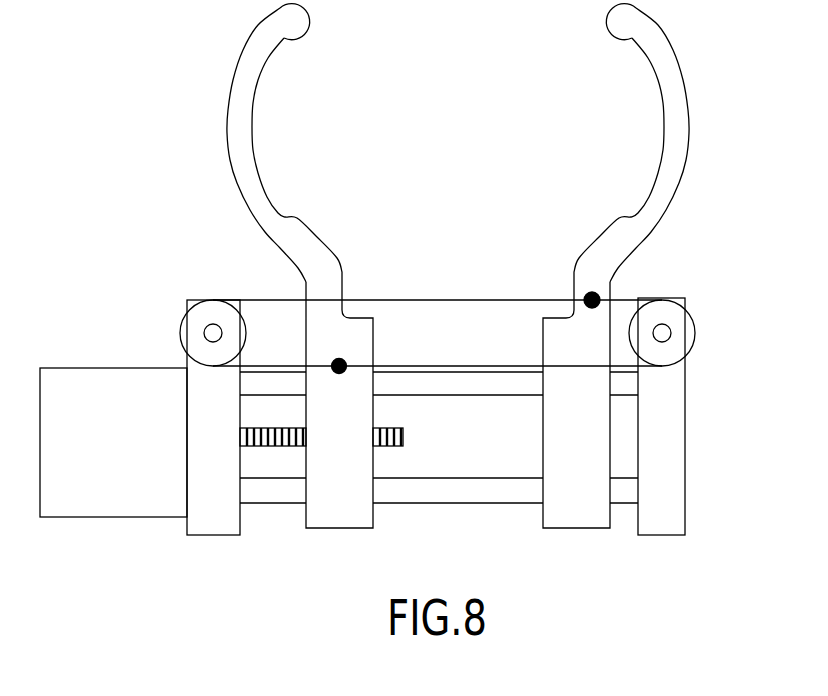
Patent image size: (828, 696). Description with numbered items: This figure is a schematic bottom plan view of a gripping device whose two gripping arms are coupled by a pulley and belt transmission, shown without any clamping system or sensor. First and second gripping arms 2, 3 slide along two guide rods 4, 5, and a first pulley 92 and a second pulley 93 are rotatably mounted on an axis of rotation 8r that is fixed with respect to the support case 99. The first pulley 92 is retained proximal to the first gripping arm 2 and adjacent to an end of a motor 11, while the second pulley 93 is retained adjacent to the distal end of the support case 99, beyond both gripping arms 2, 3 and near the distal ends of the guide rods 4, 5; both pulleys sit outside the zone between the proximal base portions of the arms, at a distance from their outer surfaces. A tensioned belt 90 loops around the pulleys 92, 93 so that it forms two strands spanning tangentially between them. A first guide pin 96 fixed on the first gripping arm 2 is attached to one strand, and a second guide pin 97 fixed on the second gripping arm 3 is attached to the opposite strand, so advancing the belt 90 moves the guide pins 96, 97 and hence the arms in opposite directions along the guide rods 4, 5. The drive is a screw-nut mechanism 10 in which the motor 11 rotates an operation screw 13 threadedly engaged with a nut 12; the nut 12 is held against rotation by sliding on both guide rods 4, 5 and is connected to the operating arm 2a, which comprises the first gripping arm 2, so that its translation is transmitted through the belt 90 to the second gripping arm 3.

The first gripping arm 2 is at (242, 161).
The operating arm 2a is at (243, 82).
The second gripping arm 3 is at (662, 62).
The guide rod 4 is at (457, 385).
The guide rod 5 is at (508, 487).
The axis of rotation 8r is at (205, 327).
The screw-nut mechanism 10 is at (321, 444).
The motor 11 is at (112, 397).
The nut 12 is at (347, 507).
The operation screw 13 is at (277, 448).
The tensioned belt 90 is at (445, 299).
The first pulley 92 is at (212, 318).
The second pulley 93 is at (659, 317).
The first guide pin 96 is at (341, 361).
The second guide pin 97 is at (590, 292).
The support case 99 is at (667, 443).